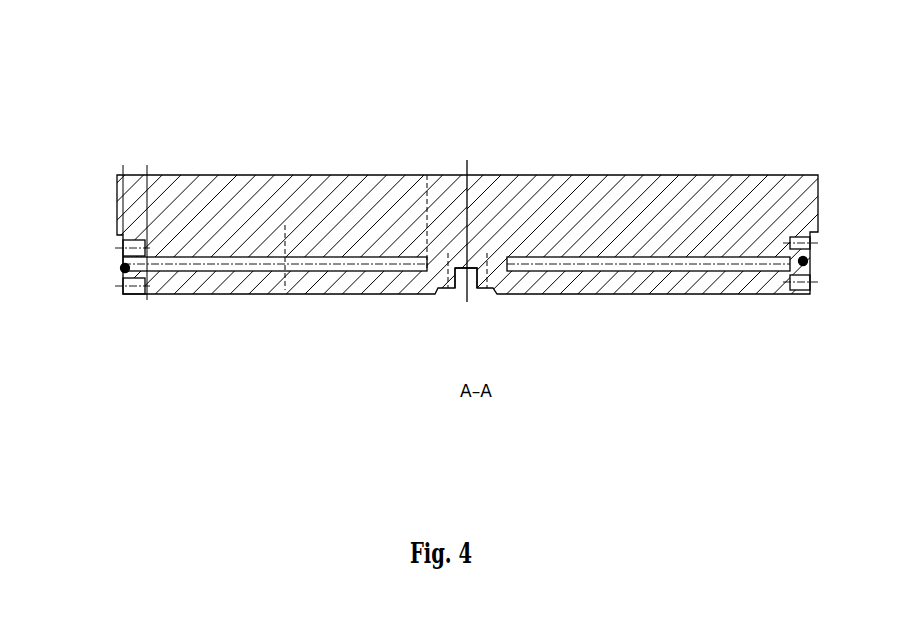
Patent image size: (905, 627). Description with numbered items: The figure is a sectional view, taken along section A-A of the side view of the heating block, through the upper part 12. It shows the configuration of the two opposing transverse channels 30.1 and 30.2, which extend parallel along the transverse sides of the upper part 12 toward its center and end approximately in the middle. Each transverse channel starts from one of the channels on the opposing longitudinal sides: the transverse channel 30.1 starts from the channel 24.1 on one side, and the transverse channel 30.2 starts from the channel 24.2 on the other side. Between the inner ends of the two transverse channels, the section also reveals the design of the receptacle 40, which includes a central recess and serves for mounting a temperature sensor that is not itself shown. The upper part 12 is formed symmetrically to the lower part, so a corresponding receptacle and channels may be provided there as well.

The upper part 12 is at (112, 101).
The channel 24.1 is at (123, 268).
The channel 24.2 is at (807, 263).
The transverse channel 30.1 is at (195, 267).
The transverse channel 30.2 is at (692, 265).
The receptacle 40 is at (465, 290).